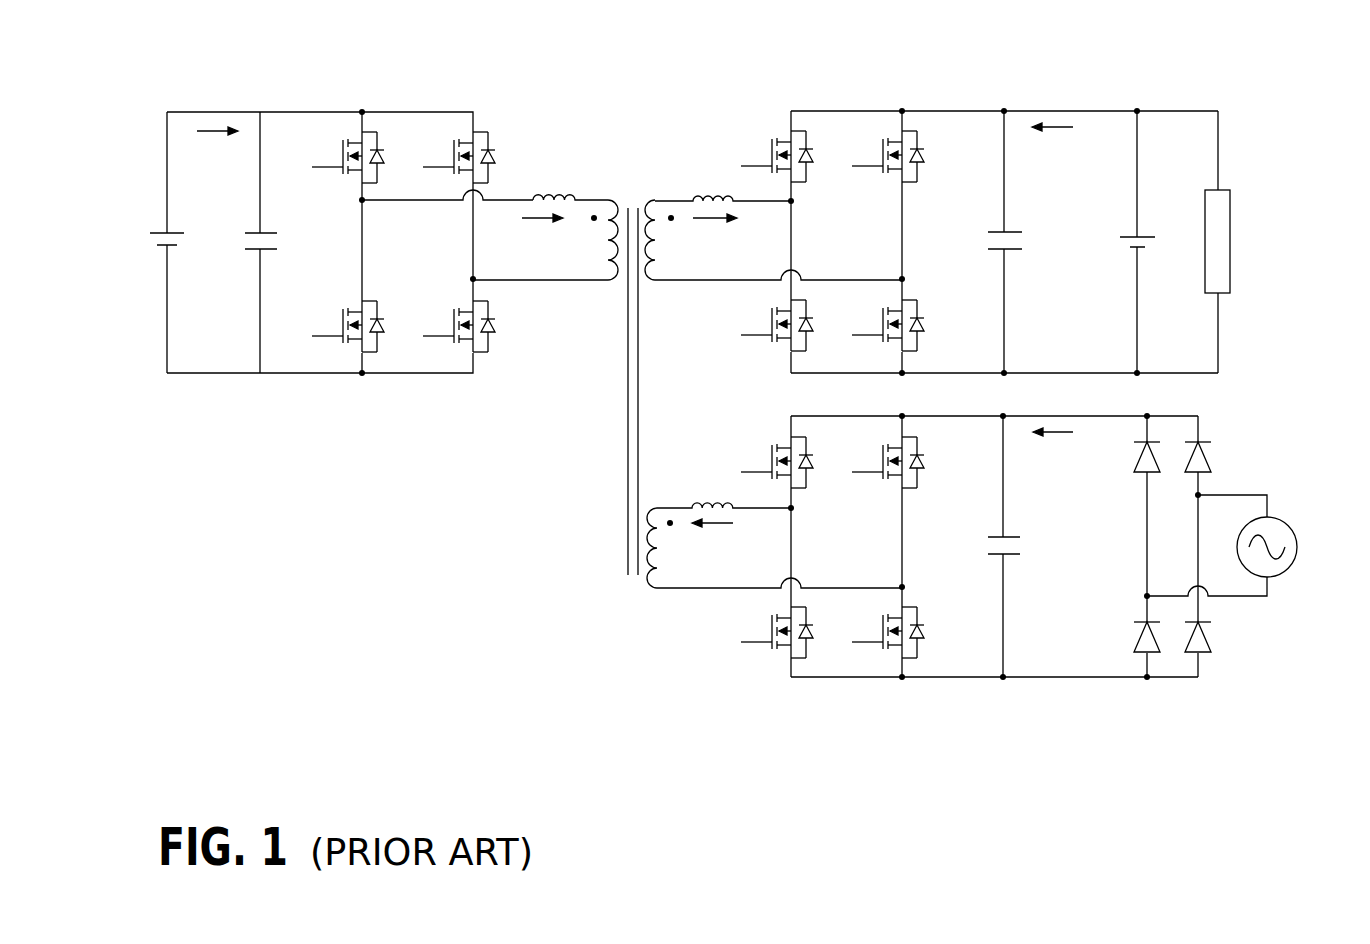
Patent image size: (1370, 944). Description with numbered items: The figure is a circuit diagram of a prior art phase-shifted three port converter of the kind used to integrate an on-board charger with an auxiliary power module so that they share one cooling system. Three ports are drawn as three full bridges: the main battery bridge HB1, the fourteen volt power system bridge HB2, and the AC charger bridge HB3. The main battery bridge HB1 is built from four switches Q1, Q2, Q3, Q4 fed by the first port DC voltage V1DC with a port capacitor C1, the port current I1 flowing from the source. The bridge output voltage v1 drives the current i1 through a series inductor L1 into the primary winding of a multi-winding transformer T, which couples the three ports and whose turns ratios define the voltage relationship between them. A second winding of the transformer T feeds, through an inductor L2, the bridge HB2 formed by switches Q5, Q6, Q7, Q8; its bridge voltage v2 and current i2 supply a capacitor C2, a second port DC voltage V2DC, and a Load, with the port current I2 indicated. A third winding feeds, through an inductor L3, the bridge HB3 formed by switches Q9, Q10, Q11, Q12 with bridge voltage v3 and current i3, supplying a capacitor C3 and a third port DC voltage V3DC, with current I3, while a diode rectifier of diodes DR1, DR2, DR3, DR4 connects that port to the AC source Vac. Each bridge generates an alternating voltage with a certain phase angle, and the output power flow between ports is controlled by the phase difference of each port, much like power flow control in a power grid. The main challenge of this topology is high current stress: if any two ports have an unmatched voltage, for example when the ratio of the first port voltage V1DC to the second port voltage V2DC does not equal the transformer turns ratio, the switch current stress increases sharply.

The H-bridge 1 (main battery) HB1 is at (350, 198).
The H-bridge 2 (14V power system) HB2 is at (1003, 198).
The H-bridge 3 (AC charger) HB3 is at (993, 582).
The MOSFET switch Q1 is at (343, 157).
The MOSFET switch Q2 is at (455, 326).
The MOSFET switch Q3 is at (455, 157).
The MOSFET switch Q4 is at (343, 326).
The MOSFET switch Q5 is at (775, 156).
The MOSFET switch Q6 is at (887, 325).
The MOSFET switch Q7 is at (887, 156).
The MOSFET switch Q8 is at (775, 325).
The MOSFET switch Q9 is at (775, 462).
The MOSFET switch Q10 is at (885, 632).
The MOSFET switch Q11 is at (885, 462).
The MOSFET switch Q12 is at (775, 632).
The capacitor C1 is at (246, 242).
The capacitor C2 is at (989, 242).
The capacitor C3 is at (988, 546).
The inductor L1 is at (570, 182).
The inductor L2' L2 is at (723, 182).
The inductor L3' L3 is at (724, 488).
The three-winding transformer (1:N2, 1:N3) T is at (687, 391).
The first port DC voltage V1DC is at (143, 242).
The second port DC voltage V2DC is at (1097, 242).
The charger DC voltage V3DC is at (1053, 547).
The AC source Vac is at (1239, 545).
The load Load is at (1250, 242).
The current I1 is at (217, 147).
The current I2 is at (1052, 145).
The current I3 is at (1053, 449).
The transformer current i1(t) i1 is at (542, 237).
The transformer current i2'(t) i2 is at (714, 237).
The transformer current i3'(t) i3 is at (714, 541).
The bridge voltage v1(t) v1 is at (430, 243).
The bridge voltage v2'(t) v2 is at (831, 243).
The bridge voltage v3'(t) v3 is at (831, 547).
The rectifier diode DR1 is at (1221, 519).
The rectifier diode DR2 is at (1123, 506).
The rectifier diode DR3 is at (1123, 636).
The rectifier diode DR4 is at (1221, 649).